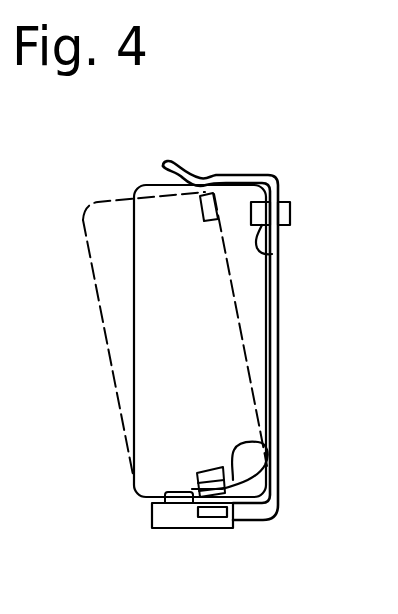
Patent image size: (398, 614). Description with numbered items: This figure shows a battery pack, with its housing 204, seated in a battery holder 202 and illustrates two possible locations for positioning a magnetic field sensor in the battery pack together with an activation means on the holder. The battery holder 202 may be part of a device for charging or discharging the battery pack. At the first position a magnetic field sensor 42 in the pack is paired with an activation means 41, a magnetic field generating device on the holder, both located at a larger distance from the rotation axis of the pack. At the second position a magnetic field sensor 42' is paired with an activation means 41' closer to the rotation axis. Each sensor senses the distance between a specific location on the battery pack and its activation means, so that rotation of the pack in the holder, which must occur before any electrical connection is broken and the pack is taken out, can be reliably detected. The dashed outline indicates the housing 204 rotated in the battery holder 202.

The housing 204 is at (158, 238).
The activation means 41 is at (303, 202).
The magnetic field sensor 42 is at (298, 252).
The magnetic field sensor 42' is at (268, 465).
The activation means 41' is at (227, 542).
The battery holder 202 is at (162, 530).